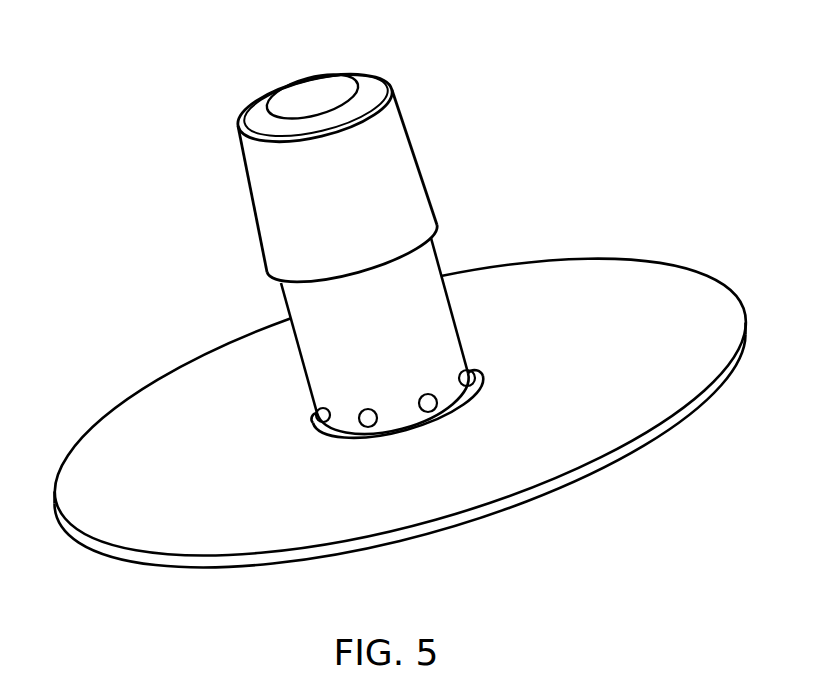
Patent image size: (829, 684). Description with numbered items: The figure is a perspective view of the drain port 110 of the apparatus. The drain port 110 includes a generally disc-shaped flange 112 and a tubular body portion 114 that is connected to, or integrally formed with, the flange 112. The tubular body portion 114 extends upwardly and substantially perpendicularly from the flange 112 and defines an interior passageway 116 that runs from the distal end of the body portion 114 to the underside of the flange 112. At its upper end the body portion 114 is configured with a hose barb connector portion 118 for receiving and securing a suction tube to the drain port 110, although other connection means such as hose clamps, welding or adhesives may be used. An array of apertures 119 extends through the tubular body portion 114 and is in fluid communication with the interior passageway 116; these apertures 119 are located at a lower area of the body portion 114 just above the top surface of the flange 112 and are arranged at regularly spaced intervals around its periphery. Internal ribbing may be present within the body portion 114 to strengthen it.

The drain port 110 is at (494, 78).
The flange 112 is at (655, 278).
The tubular body portion 114 is at (300, 302).
The interior passageway 116 is at (319, 90).
The hose barb connector portion 118 is at (405, 162).
The apertures 119 is at (413, 428).